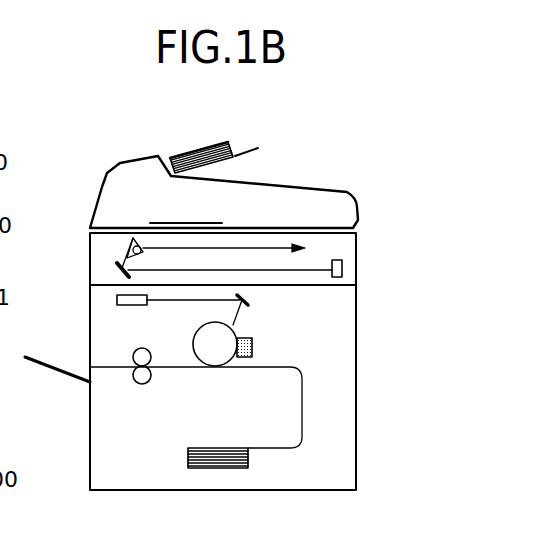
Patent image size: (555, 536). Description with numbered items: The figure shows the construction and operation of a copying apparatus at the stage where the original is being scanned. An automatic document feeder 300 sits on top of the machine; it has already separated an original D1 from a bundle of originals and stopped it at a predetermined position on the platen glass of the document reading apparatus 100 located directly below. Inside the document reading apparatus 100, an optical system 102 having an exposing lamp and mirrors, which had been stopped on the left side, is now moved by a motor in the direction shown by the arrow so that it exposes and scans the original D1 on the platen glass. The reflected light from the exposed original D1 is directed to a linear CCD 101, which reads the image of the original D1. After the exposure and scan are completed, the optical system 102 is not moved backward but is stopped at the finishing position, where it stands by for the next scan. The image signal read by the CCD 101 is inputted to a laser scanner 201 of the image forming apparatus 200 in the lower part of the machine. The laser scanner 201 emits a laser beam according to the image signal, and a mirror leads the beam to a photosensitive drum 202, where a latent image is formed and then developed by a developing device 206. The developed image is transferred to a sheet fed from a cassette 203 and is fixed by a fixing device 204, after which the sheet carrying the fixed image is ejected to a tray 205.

The automatic document feeder 300 is at (345, 190).
The original D1 is at (206, 223).
The document reading apparatus 100 is at (357, 237).
The linear CCD 101 is at (342, 268).
The optical system 102 is at (128, 257).
The image forming apparatus 200 is at (357, 460).
The laser scanner 201 is at (117, 305).
The photosensitive drum 202 is at (235, 330).
The cassette 203 is at (188, 455).
The fixing device 204 is at (135, 384).
The tray 205 is at (43, 368).
The developing device 206 is at (252, 348).